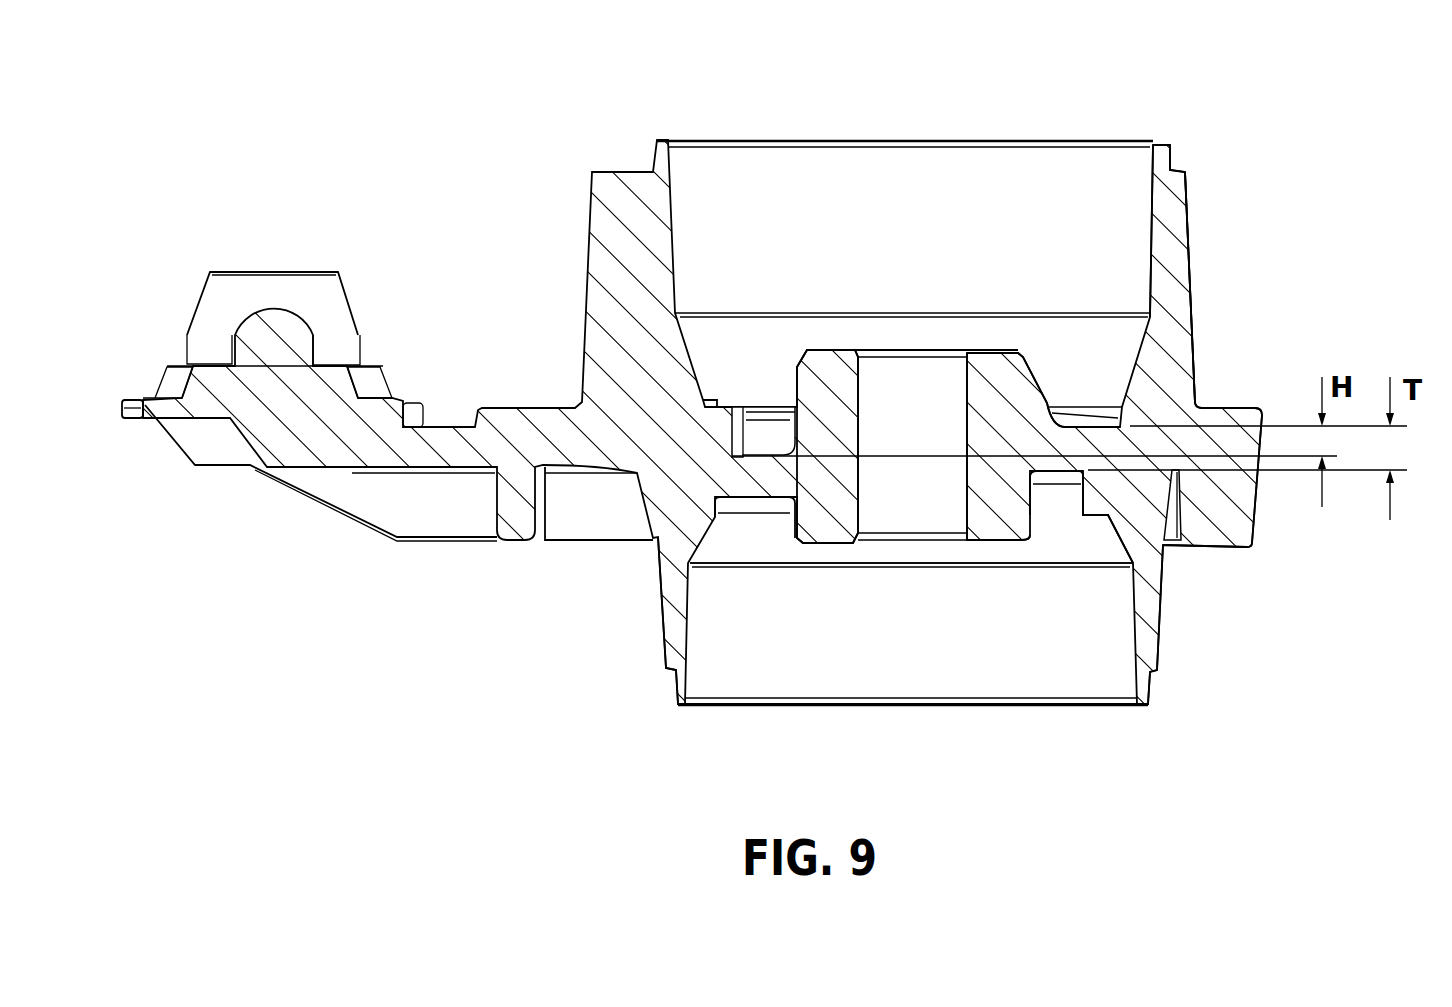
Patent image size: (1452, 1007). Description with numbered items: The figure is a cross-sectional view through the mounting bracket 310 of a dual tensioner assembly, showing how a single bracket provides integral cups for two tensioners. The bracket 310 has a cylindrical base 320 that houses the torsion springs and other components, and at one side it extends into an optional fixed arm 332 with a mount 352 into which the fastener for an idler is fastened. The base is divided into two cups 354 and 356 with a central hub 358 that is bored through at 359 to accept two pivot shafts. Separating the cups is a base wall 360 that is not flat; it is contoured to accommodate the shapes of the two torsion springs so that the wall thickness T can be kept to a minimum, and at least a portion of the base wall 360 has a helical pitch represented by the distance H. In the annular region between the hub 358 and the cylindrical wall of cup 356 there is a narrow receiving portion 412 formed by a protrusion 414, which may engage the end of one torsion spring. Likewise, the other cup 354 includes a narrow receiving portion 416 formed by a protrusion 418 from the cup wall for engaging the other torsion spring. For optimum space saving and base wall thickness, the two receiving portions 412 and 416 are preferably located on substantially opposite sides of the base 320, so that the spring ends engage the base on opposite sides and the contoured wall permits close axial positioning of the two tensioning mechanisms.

The mounting bracket 310 is at (513, 408).
The cylindrical base 320 is at (1204, 322).
The fixed arm 332 is at (222, 445).
The mount 352 is at (217, 302).
The cup 354 is at (1147, 635).
The cup 356 is at (1175, 237).
The hub 358 is at (990, 410).
The bore 359 is at (913, 385).
The base wall 360 is at (740, 478).
The narrow receiving portion 412 is at (737, 407).
The protrusion 414 is at (717, 407).
The narrow receiving portion 416 is at (1033, 547).
The protrusion 418 is at (1093, 507).